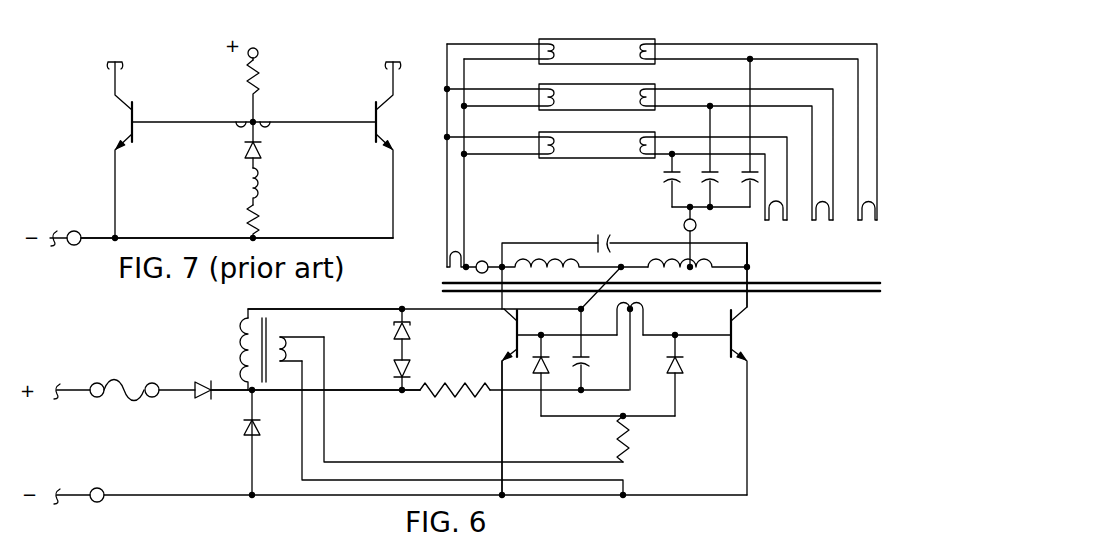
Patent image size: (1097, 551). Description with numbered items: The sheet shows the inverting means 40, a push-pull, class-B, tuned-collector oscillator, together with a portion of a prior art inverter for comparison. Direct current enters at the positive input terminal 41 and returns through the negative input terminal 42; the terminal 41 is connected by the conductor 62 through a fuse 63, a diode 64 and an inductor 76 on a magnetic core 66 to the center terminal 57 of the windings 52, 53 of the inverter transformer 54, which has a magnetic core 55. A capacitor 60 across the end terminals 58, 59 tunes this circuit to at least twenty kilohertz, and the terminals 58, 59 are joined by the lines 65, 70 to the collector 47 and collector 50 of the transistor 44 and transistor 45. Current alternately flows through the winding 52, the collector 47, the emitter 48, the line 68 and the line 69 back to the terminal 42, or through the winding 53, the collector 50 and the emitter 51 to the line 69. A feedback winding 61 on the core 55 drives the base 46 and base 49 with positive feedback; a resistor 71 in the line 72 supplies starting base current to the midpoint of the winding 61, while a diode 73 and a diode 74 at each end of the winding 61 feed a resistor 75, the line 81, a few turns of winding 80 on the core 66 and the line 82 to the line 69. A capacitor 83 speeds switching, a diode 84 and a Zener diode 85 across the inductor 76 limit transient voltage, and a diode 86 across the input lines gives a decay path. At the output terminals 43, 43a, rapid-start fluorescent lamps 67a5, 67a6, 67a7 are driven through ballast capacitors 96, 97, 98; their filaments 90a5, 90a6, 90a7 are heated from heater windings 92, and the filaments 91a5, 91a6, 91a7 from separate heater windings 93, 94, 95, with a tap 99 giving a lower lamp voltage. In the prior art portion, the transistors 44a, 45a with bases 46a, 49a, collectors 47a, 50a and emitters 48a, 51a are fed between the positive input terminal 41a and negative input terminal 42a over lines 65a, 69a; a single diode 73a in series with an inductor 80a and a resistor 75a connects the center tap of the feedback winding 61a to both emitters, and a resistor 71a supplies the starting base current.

In FIG. 6, the inverting means 40 is at (770, 474).
In FIG. 6, the positive input terminal 41 is at (93, 381).
In FIG. 6, the negative input terminal 42 is at (100, 502).
In FIG. 6, the output terminal 43 is at (482, 260).
In FIG. 6, the output terminal 43a is at (684, 224).
In FIG. 6, the transistor 44 is at (535, 402).
In FIG. 6, the transistor 45 is at (729, 369).
In FIG. 6, the base 46 is at (520, 330).
In FIG. 6, the collector 47 is at (502, 315).
In FIG. 6, the emitter 48 is at (498, 354).
In FIG. 6, the base 49 is at (730, 330).
In FIG. 6, the collector 50 is at (739, 313).
In FIG. 6, the emitter 51 is at (741, 369).
In FIG. 6, the winding 52 is at (564, 260).
In FIG. 6, the winding 53 is at (703, 245).
In FIG. 6, the inverter transformer 54 is at (762, 280).
In FIG. 6, the magnetic core 55 is at (846, 282).
In FIG. 6, the center terminal 57 is at (621, 265).
In FIG. 6, the end terminal 58 is at (505, 267).
In FIG. 6, the end terminal 59 is at (742, 267).
In FIG. 6, the capacitor 60 is at (598, 238).
In FIG. 6, the feedback winding 61 is at (647, 318).
In FIG. 6, the conductor 62 is at (181, 383).
In FIG. 6, the fuse 63 is at (118, 382).
In FIG. 6, the diode 64 is at (202, 382).
In FIG. 6, the line 65 is at (446, 308).
In FIG. 6, the magnetic core 66 is at (280, 334).
In FIG. 6, the fluorescent lamp 67a5 is at (551, 153).
In FIG. 6, the fluorescent lamp 67a6 is at (570, 106).
In FIG. 6, the fluorescent lamp 67a7 is at (572, 59).
In FIG. 6, the line 68 is at (500, 442).
In FIG. 6, the line 69 is at (176, 495).
In FIG. 7, the line 70 is at (379, 61).
In FIG. 6, the line 70 is at (748, 303).
In FIG. 6, the resistor 71 is at (446, 400).
In FIG. 6, the line 72 is at (339, 392).
In FIG. 6, the diode 73 is at (537, 367).
In FIG. 6, the diode 74 is at (681, 370).
In FIG. 6, the resistor 75 is at (628, 433).
In FIG. 6, the inductor 76 is at (238, 337).
In FIG. 6, the winding 80 is at (282, 355).
In FIG. 6, the line 81 is at (339, 460).
In FIG. 6, the line 82 is at (300, 458).
In FIG. 6, the capacitor 83 is at (589, 362).
In FIG. 6, the diode 84 is at (392, 367).
In FIG. 6, the Zener diode 85 is at (390, 332).
In FIG. 6, the diode 86 is at (240, 430).
In FIG. 6, the filament 90a5 is at (544, 156).
In FIG. 6, the filament 90a6 is at (545, 110).
In FIG. 6, the filament 90a7 is at (545, 60).
In FIG. 6, the filament 91a5 is at (645, 154).
In FIG. 6, the filament 91a6 is at (646, 107).
In FIG. 6, the filament 91a7 is at (650, 62).
In FIG. 6, the heater windings 92 is at (451, 253).
In FIG. 6, the heater winding 93 is at (772, 224).
In FIG. 6, the heater winding 94 is at (818, 224).
In FIG. 6, the heater winding 95 is at (863, 224).
In FIG. 6, the capacitor 96 is at (670, 184).
In FIG. 6, the capacitor 97 is at (708, 182).
In FIG. 6, the capacitor 98 is at (748, 182).
In FIG. 6, the tap 99 is at (679, 265).
In FIG. 7, the positive input terminal 41a is at (258, 51).
In FIG. 7, the negative input terminal 42a is at (78, 250).
In FIG. 7, the transistor 44a is at (124, 150).
In FIG. 7, the transistor 45a is at (354, 142).
In FIG. 7, the base 46a is at (140, 130).
In FIG. 7, the collector 47a is at (125, 95).
In FIG. 7, the emitter 48a is at (122, 150).
In FIG. 7, the base 49a is at (374, 130).
In FIG. 7, the collector 50a is at (382, 84).
In FIG. 7, the emitter 51a is at (380, 152).
In FIG. 7, the feedback winding 61a is at (239, 127).
In FIG. 7, the line 65a is at (113, 78).
In FIG. 7, the line 69a is at (94, 238).
In FIG. 7, the resistor 71a is at (246, 80).
In FIG. 7, the diode 73a is at (244, 160).
In FIG. 7, the resistor 75a is at (247, 216).
In FIG. 7, the inductor 80a is at (244, 183).